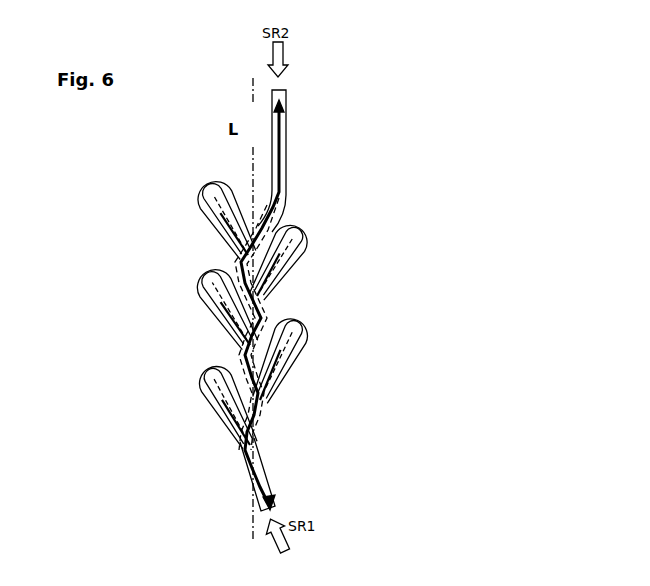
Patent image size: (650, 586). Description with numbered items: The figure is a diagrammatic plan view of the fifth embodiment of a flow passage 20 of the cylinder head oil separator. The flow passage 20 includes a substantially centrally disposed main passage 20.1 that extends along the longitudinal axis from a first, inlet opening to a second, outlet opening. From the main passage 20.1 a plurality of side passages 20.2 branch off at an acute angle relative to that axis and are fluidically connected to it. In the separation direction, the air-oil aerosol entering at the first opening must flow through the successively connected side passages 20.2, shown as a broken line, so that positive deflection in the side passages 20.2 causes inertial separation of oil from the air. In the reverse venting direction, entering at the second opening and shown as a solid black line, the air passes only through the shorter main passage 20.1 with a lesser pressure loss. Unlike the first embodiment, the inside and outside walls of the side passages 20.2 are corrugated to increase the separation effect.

The flow passage 20 is at (205, 217).
The central main passage 20.1 is at (281, 132).
The side passage 20.2 is at (208, 402).